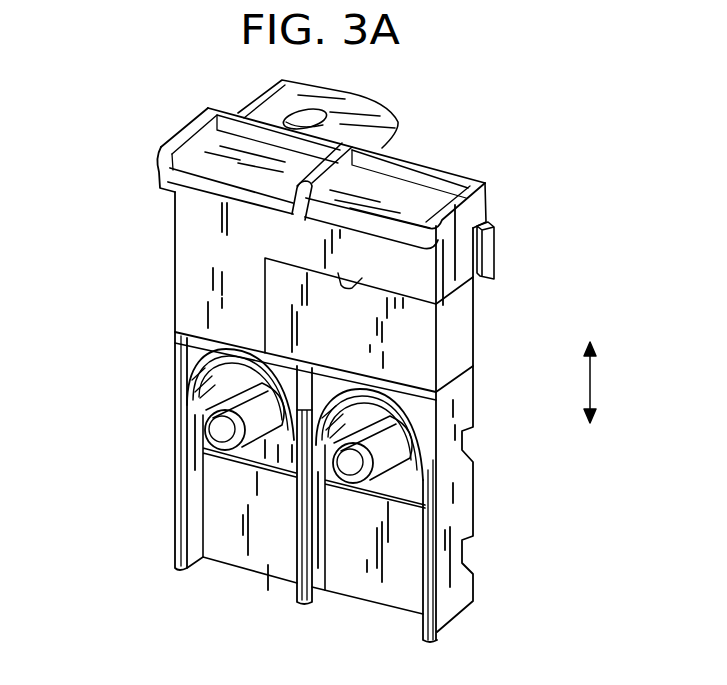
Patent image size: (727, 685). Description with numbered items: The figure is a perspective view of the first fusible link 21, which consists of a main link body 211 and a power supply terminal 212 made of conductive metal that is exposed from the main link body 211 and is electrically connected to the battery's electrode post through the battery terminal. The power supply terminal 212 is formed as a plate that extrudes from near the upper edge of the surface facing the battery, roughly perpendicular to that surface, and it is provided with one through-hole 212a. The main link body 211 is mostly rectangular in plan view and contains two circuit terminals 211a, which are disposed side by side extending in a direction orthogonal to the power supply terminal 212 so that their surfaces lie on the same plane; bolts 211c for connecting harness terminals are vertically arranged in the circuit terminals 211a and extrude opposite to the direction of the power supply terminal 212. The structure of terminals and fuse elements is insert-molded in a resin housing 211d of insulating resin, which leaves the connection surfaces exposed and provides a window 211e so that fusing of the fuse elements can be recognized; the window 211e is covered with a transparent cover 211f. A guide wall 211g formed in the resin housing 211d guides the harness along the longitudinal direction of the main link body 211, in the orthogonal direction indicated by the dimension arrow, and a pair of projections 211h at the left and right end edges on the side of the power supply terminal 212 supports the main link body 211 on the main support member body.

The first fusible link 21 is at (138, 148).
The main link body 211 is at (162, 284).
The circuit terminals 211a is at (200, 395).
The bolts 211c is at (223, 437).
The resin housing 211d is at (213, 243).
The window 211e is at (362, 278).
The transparent cover 211f is at (412, 343).
The guide wall 211g is at (430, 628).
The projections 211h is at (498, 248).
The power supply terminal 212 is at (307, 96).
The through-hole 212a is at (312, 133).